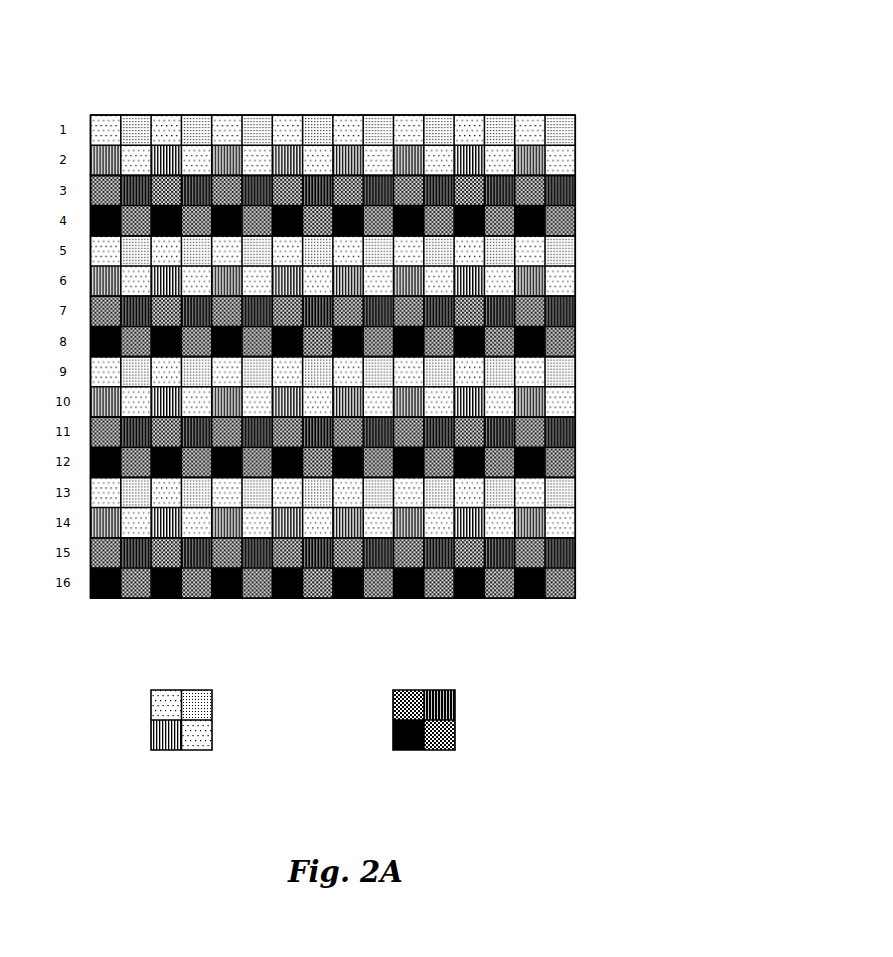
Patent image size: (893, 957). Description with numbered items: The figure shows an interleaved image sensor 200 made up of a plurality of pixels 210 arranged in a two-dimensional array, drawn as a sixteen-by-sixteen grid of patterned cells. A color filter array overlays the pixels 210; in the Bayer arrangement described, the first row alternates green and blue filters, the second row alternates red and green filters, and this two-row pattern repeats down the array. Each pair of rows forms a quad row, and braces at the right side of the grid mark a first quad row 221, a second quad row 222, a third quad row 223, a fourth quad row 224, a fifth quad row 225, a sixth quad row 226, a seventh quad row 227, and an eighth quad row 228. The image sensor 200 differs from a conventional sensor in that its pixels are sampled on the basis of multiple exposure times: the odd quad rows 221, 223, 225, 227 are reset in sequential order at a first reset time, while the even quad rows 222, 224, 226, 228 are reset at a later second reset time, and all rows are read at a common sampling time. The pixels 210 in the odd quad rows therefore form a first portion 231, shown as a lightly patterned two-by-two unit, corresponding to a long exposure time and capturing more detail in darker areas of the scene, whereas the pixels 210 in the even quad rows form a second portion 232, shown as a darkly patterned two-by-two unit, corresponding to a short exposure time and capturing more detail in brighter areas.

The interleaved image sensor 200 is at (643, 83).
The pixels 210 is at (446, 115).
The first quad row 221 is at (591, 115).
The second quad row 222 is at (591, 175).
The third quad row 223 is at (591, 236).
The fourth quad row 224 is at (591, 296).
The fifth quad row 225 is at (591, 357).
The sixth quad row 226 is at (591, 417).
The seventh quad row 227 is at (591, 477).
The eighth quad row 228 is at (591, 538).
The first portion of the pixels 231 is at (214, 720).
The second portion of the pixels 232 is at (457, 720).